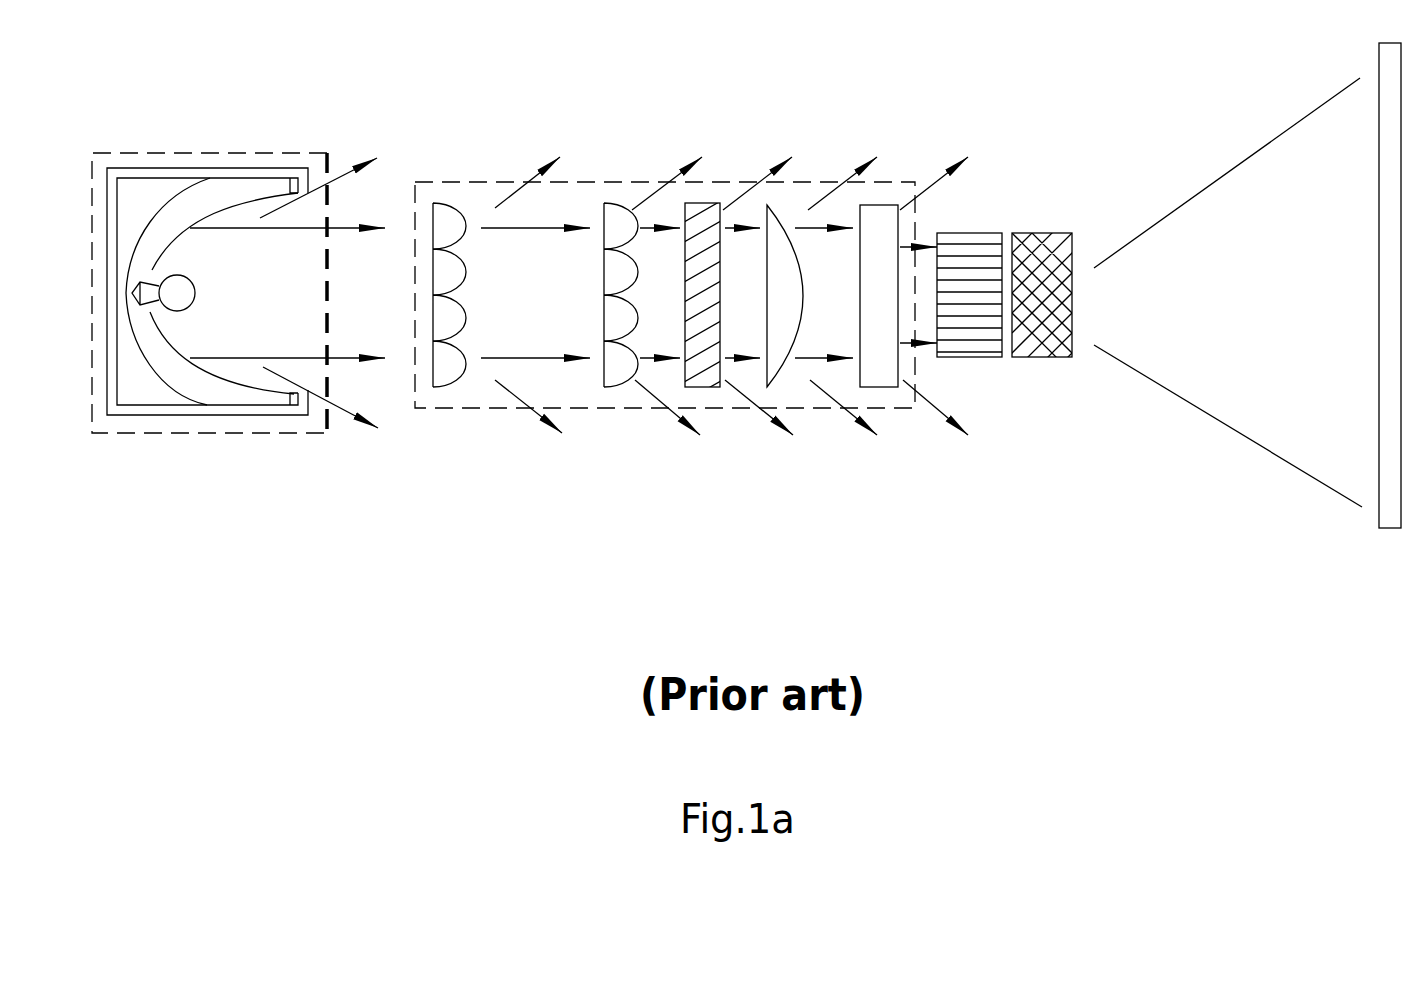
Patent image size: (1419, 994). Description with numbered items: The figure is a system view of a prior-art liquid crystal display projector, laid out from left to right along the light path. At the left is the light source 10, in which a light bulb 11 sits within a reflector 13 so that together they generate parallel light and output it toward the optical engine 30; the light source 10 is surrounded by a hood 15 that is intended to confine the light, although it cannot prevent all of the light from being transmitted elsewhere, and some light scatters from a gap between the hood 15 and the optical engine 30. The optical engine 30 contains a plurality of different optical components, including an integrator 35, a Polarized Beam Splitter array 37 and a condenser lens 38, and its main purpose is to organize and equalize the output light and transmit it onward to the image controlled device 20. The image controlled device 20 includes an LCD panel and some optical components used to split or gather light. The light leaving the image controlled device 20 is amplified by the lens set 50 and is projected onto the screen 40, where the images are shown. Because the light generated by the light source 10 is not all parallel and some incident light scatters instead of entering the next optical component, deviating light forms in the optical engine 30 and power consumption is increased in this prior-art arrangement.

The light source 10 is at (205, 152).
The light bulb 11 is at (177, 296).
The reflector 13 is at (160, 228).
The hood 15 is at (173, 175).
The image controlled device 20 is at (875, 370).
The optical engine 30 is at (808, 180).
The integrator 35 is at (445, 365).
The Polarized Beam Splitter (PBS) array 37 is at (702, 367).
The condenser lens 38 is at (777, 363).
The screen 40 is at (1392, 517).
The lens set 50 is at (1038, 233).